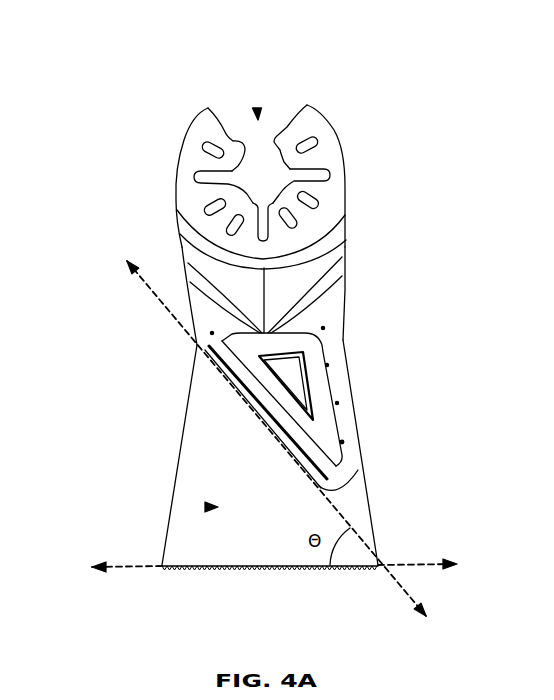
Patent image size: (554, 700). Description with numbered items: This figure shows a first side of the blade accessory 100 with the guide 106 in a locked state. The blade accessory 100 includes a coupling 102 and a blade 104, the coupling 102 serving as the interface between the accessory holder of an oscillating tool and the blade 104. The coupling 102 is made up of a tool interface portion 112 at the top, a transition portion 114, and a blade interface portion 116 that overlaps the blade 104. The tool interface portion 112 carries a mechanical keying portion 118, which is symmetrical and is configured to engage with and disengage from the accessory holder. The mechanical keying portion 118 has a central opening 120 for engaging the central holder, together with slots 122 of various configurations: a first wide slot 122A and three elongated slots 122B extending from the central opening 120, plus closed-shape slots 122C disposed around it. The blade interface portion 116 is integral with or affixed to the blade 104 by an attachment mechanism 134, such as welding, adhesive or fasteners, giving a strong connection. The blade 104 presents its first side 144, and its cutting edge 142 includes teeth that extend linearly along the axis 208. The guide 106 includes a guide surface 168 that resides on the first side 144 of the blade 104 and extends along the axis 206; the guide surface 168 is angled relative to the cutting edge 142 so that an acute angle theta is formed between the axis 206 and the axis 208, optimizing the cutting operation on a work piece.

The blade accessory 100 is at (498, 57).
The coupling 102 is at (453, 102).
The blade 104 is at (88, 547).
The guide 106 is at (326, 362).
The tool interface portion 112 is at (367, 113).
The transition portion 114 is at (367, 210).
The blade interface portion 116 is at (398, 297).
The mechanical keying portion 118 is at (257, 106).
The central opening 120 is at (262, 204).
The slots 122 is at (112, 113).
The first wide slot 122A is at (267, 127).
The elongated slots 122B is at (212, 178).
The closed-shape slots 122C is at (213, 205).
The attachment mechanism 134 is at (344, 441).
The cutting edge 142 is at (243, 570).
The first side 144 is at (205, 507).
The guide surface 168 is at (255, 405).
The axis 206 is at (395, 580).
The axis 208 is at (132, 572).